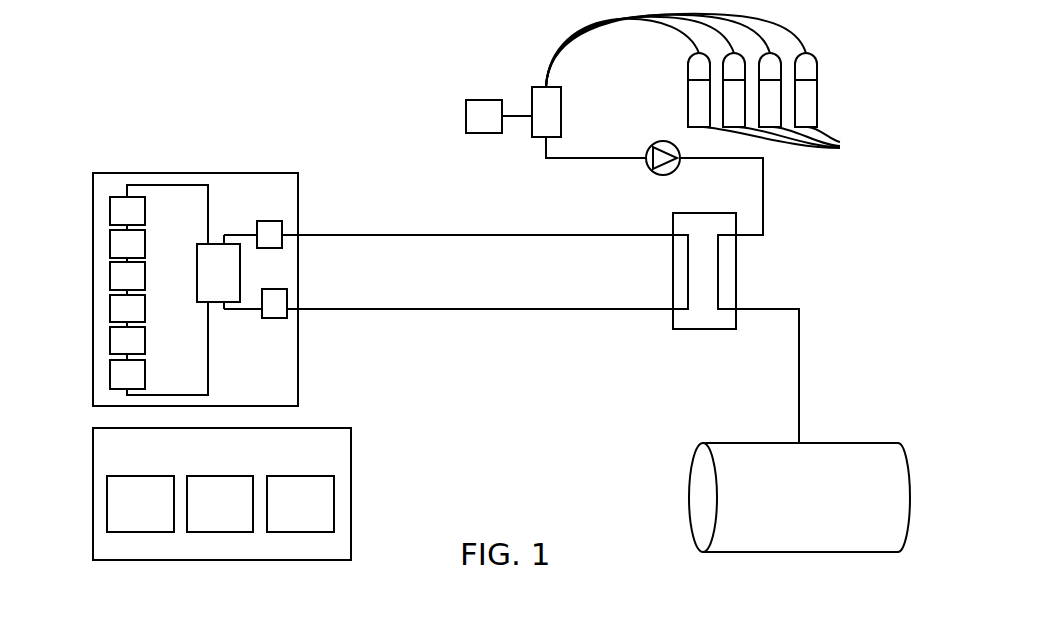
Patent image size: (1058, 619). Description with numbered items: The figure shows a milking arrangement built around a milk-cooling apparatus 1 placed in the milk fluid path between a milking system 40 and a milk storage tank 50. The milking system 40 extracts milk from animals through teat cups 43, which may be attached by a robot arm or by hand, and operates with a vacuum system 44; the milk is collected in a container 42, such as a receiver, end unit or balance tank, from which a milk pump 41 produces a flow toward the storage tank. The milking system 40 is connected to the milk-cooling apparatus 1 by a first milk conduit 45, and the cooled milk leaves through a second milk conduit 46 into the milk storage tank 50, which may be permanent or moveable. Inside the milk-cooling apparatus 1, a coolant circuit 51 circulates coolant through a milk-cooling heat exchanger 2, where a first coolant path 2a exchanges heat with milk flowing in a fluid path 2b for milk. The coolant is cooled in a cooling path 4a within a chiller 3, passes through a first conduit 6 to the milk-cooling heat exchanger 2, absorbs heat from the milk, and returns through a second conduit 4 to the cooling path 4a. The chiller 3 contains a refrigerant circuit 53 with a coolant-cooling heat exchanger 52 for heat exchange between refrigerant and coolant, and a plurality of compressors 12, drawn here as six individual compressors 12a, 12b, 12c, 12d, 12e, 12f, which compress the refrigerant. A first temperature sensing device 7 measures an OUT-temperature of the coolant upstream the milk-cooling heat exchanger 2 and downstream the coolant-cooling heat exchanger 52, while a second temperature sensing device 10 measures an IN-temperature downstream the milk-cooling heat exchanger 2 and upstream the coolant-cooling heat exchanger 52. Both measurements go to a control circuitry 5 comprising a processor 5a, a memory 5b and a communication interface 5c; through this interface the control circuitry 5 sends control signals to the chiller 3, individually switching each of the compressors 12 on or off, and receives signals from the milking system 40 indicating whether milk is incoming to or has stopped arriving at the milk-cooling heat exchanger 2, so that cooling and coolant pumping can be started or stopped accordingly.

The milk-cooling apparatus 1 is at (340, 134).
The milk-cooling heat exchanger 2 is at (705, 291).
The first coolant path 2a is at (722, 255).
The fluid path for milk 2b is at (690, 258).
The chiller 3 is at (118, 172).
The second conduit 4 is at (328, 235).
The cooling path 4a is at (248, 235).
The control circuitry 5 is at (125, 462).
The processor 5a is at (127, 515).
The memory 5b is at (207, 515).
The communication interface 5c is at (287, 515).
The first conduit 6 is at (530, 310).
The first temperature sensing device 7 is at (287, 300).
The second temperature sensing device 10 is at (266, 221).
The compressors 12 is at (103, 188).
The compressor 12a is at (110, 207).
The compressor 12b is at (110, 240).
The compressor 12c is at (110, 272).
The compressor 12d is at (110, 315).
The compressor 12e is at (110, 350).
The compressor 12f is at (110, 377).
The milking system 40 is at (852, 95).
The milk pump 41 is at (650, 173).
The container 42 is at (532, 94).
The teat cups 43 is at (790, 143).
The vacuum system 44 is at (465, 120).
The first milk conduit 45 is at (765, 188).
The second milk conduit 46 is at (800, 338).
The milk storage tank 50 is at (852, 443).
The coolant circuit 51 is at (425, 235).
The coolant-cooling heat exchanger 52 is at (198, 262).
The refrigerant circuit 53 is at (170, 185).